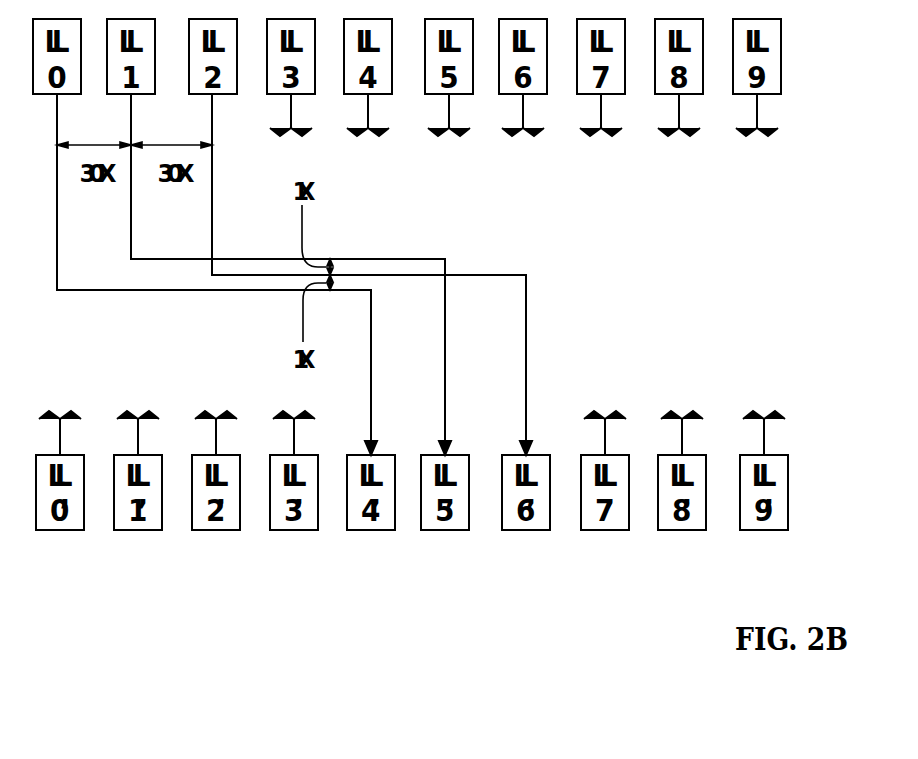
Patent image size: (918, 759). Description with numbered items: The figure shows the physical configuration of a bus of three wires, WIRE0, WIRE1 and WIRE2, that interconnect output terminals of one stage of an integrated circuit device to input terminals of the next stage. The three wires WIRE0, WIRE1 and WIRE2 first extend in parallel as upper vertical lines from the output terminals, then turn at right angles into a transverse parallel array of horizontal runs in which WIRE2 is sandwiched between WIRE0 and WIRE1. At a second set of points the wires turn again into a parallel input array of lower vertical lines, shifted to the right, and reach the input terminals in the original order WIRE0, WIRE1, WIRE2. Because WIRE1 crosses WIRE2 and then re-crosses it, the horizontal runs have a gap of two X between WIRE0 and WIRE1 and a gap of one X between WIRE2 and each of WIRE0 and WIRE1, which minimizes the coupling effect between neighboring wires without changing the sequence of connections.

The wire of bit 0 WIRE0 is at (217, 274).
The wire of bit 1 WIRE1 is at (291, 274).
The wire of bit 2 WIRE2 is at (372, 274).